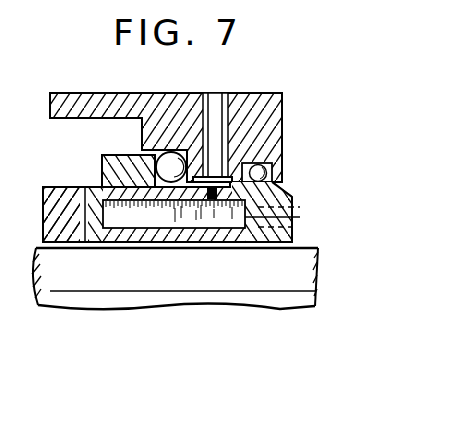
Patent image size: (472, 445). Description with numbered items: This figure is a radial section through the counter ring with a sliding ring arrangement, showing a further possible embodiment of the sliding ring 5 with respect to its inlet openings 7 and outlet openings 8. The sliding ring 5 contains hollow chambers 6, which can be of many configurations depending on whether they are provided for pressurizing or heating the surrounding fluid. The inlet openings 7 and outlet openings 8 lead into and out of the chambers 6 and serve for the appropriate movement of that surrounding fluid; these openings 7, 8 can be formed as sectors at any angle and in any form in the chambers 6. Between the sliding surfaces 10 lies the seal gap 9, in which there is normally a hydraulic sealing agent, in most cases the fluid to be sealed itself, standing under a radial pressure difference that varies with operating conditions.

The sliding ring 5 is at (118, 165).
The hollow chambers 6 is at (177, 224).
The inlet openings 7 is at (223, 99).
The outlet openings 8 is at (261, 237).
The seal gap 9 is at (85, 241).
The sliding surfaces 10 is at (85, 190).